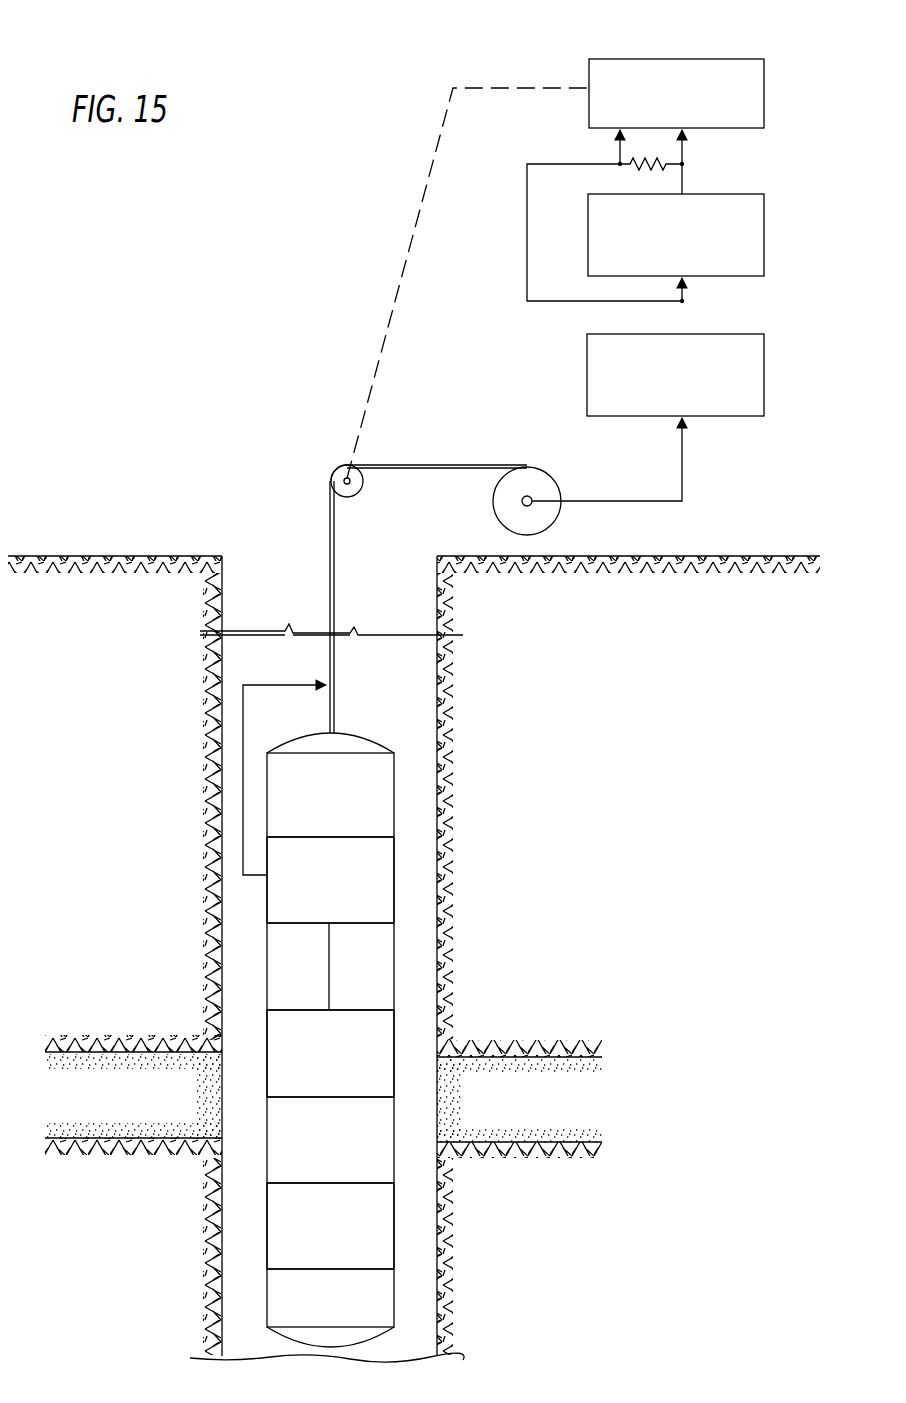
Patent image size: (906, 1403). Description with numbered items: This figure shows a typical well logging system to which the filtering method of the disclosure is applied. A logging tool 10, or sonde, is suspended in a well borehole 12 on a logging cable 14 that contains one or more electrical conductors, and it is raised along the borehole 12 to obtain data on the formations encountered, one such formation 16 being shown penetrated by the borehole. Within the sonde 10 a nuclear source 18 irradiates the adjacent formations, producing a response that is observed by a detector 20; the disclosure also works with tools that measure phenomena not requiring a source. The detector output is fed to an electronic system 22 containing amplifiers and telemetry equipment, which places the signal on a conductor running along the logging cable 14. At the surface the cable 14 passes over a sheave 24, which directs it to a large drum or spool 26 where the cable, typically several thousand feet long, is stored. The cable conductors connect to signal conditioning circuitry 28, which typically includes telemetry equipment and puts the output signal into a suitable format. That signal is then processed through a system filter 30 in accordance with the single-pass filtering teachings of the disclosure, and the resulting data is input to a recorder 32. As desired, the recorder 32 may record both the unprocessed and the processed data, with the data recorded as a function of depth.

The logging tool 10 is at (384, 1016).
The well borehole 12 is at (437, 686).
The logging cable 14 is at (334, 605).
The formation 16 is at (565, 1065).
The nuclear source 18 is at (394, 1245).
The detector 20 is at (395, 1035).
The electronic system 22 is at (394, 870).
The sheave 24 is at (360, 489).
The drum 26 is at (556, 517).
The signal conditioning circuitry 28 is at (764, 365).
The system filter 30 is at (764, 237).
The recorder 32 is at (764, 91).